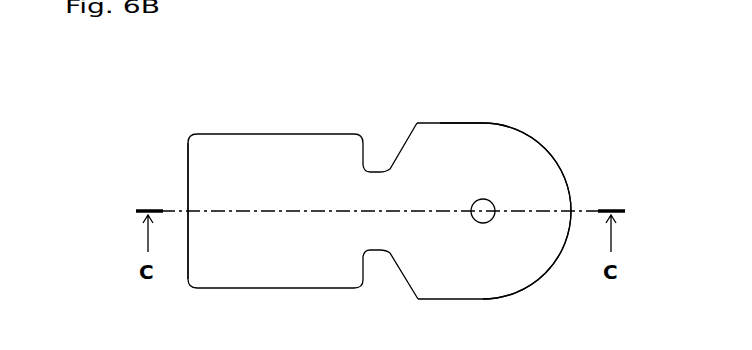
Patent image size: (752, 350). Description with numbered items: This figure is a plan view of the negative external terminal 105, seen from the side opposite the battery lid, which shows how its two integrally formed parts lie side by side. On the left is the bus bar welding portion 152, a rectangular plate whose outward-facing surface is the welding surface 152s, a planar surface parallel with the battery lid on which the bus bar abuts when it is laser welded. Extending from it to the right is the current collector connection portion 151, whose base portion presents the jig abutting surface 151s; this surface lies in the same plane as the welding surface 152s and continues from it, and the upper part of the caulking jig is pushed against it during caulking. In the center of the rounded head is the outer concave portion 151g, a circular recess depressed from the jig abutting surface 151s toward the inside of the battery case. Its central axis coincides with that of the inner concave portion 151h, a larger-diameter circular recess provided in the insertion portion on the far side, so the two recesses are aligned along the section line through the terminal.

The negative external terminal 105 is at (173, 83).
The bus bar welding portion 152 is at (278, 124).
The current collector connection portion 151 is at (580, 97).
The welding surface 152s is at (232, 194).
The outer concave portion 151g is at (490, 201).
The jig abutting surface 151s is at (480, 255).
The inner concave portion 151h is at (510, 61).